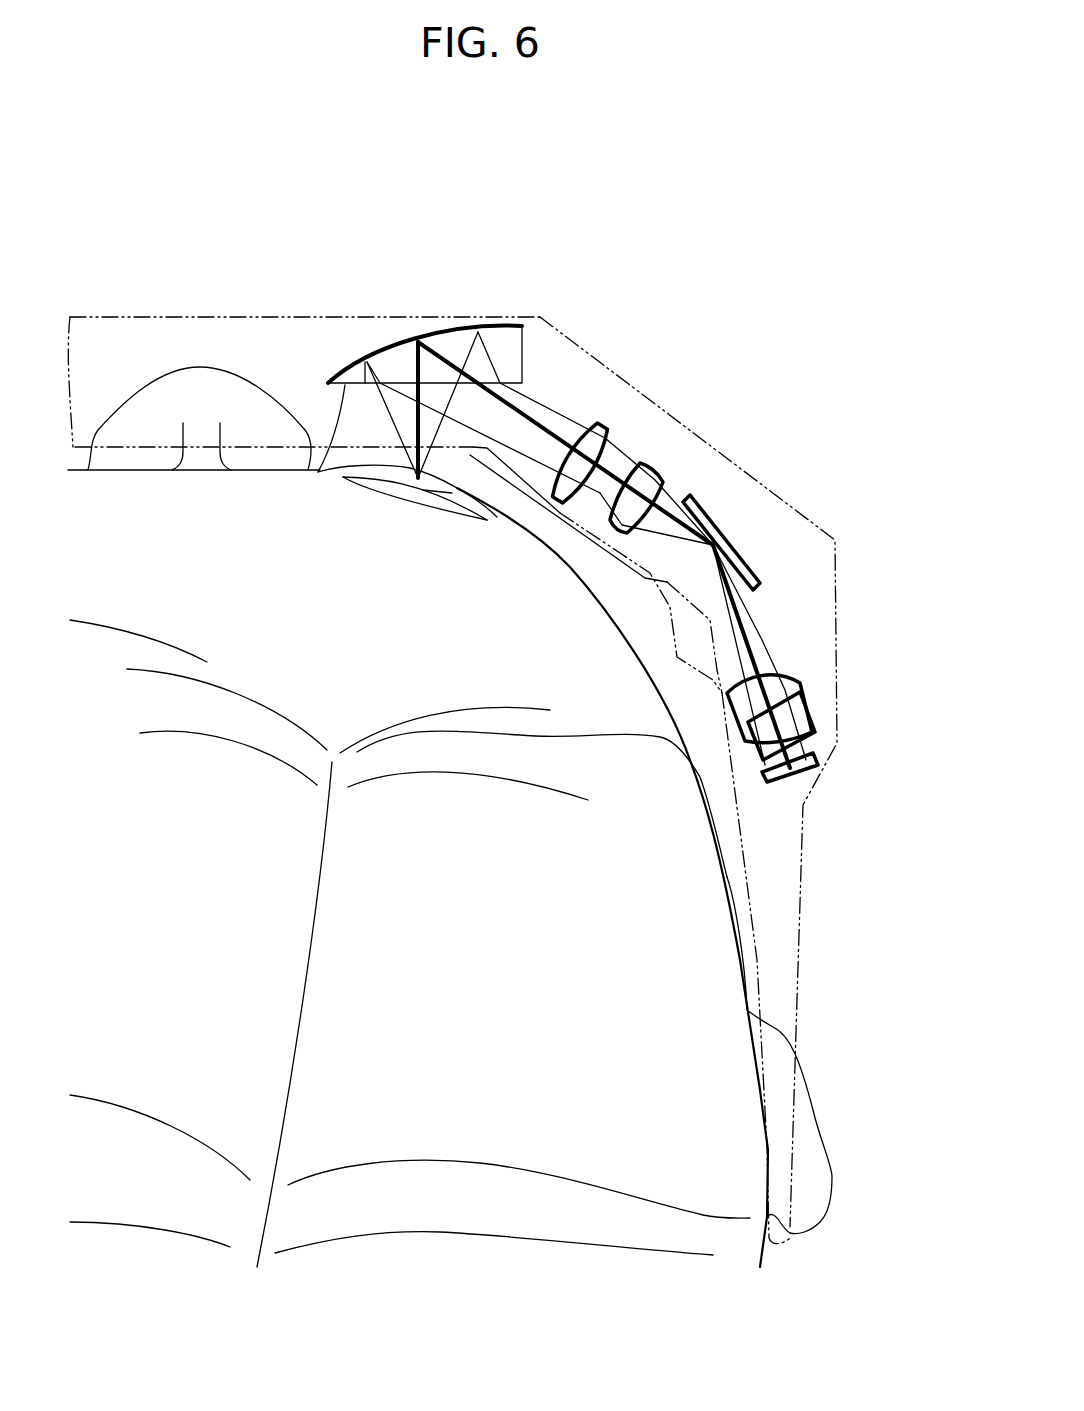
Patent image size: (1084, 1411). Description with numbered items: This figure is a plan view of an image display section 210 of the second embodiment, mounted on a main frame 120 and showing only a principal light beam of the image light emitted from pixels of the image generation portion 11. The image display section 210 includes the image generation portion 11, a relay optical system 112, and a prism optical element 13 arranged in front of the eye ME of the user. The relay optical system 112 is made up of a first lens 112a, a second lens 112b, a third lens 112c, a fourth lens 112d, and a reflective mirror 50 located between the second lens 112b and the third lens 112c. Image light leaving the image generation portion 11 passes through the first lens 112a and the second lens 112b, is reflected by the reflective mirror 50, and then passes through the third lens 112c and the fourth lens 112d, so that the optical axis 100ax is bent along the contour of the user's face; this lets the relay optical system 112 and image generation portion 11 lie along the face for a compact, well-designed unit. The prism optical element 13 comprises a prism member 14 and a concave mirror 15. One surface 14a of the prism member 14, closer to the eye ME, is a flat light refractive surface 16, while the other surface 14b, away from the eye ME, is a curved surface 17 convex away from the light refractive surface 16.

The main frame 120 is at (132, 317).
The prism optical element 13 is at (347, 355).
The prism member 14 is at (397, 358).
The one surface 14a is at (339, 464).
The another surface 14b is at (440, 300).
The concave mirror 15 is at (437, 328).
The light refractive surface 16 is at (345, 385).
The curved surface 17 is at (500, 325).
The eye ME is at (418, 482).
The reflective mirror 50 is at (687, 520).
The image display section 210 is at (625, 277).
The relay optical system 112 is at (760, 333).
The first lens 112a is at (806, 713).
The second lens 112b is at (793, 670).
The third lens 112c is at (647, 478).
The fourth lens 112d is at (600, 430).
The optical axis 100ax is at (790, 750).
The image generation portion 11 is at (800, 763).